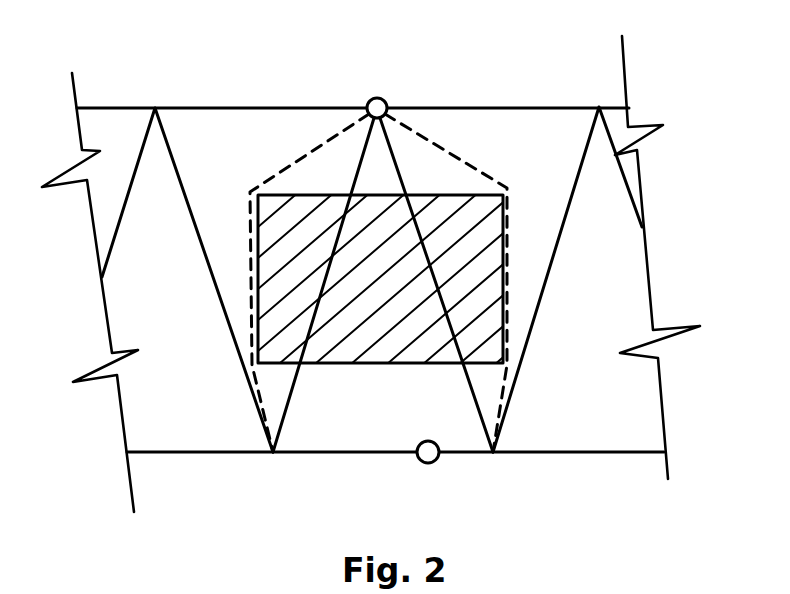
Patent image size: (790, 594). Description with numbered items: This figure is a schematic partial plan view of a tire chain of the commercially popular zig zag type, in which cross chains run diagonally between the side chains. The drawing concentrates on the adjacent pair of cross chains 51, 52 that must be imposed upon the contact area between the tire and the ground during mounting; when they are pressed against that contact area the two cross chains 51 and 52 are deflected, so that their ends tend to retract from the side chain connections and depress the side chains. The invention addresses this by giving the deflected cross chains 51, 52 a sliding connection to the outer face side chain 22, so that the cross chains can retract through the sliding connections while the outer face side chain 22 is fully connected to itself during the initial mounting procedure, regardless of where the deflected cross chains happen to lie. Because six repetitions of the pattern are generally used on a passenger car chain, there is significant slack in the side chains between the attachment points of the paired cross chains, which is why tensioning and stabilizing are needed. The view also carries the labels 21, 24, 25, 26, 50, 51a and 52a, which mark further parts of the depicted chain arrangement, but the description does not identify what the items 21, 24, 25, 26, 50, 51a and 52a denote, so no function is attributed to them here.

The upper boundary line 21 is at (223, 78).
The outer face side chain 22 is at (195, 458).
The sight lines 24 is at (232, 345).
The upper viewpoint 25 is at (410, 50).
The lower point 26 is at (420, 468).
The object 50 is at (360, 372).
The cross chain 51 is at (428, 157).
The cross chain 52 is at (352, 165).
The right boundary of view 51a is at (433, 141).
The left boundary of view 52a is at (317, 147).